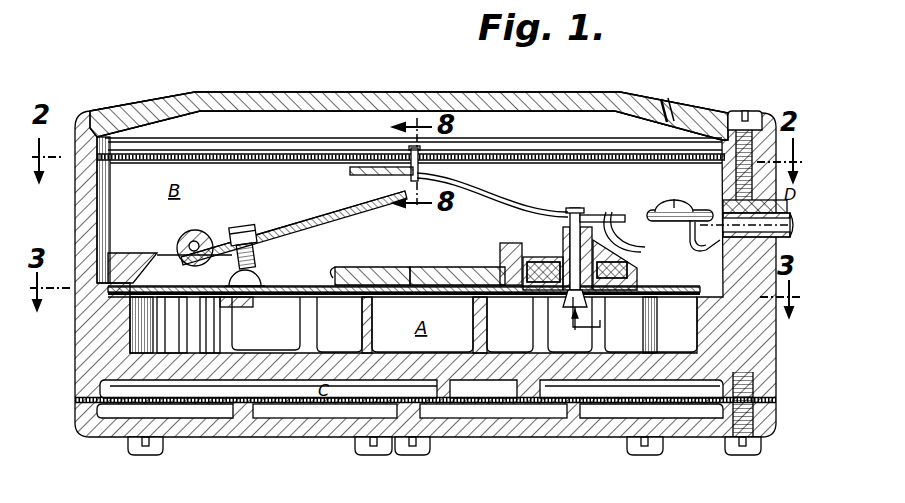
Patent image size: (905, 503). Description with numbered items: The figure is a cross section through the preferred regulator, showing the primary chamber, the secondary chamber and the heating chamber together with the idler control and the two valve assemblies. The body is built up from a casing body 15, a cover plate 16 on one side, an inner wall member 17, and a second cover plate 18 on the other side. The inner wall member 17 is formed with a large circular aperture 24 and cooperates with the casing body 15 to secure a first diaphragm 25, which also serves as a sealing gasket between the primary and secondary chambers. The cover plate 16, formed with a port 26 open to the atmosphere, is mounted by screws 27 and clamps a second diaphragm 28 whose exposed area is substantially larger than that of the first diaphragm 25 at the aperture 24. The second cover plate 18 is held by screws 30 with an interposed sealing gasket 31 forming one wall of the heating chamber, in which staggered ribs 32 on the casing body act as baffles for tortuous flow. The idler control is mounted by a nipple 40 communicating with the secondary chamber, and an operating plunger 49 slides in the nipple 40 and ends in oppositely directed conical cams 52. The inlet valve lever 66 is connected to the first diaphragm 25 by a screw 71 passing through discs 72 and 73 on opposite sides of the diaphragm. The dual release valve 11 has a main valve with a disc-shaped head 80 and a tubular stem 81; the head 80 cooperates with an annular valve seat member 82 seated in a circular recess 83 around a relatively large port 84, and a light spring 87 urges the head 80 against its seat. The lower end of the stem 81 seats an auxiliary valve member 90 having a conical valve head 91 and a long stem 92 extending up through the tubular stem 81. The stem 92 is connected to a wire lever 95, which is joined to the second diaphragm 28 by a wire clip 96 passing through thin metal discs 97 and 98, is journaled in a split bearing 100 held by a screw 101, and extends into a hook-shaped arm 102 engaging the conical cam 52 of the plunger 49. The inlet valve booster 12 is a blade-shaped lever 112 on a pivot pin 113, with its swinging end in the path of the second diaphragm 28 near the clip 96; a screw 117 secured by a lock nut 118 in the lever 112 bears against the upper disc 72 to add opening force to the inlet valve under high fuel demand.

The dual release valve 11 is at (586, 328).
The inlet valve booster 12 is at (312, 220).
The casing body 15 is at (82, 340).
The cover plate 16 is at (612, 100).
The inner wall member 17 is at (465, 267).
The second cover plate 18 is at (300, 438).
The circular aperture 24 is at (335, 268).
The first diaphragm 25 is at (507, 325).
The port 26 is at (668, 106).
The screws 27 is at (756, 111).
The second diaphragm 28 is at (216, 161).
The screws 30 is at (146, 456).
The sealing gasket 31 is at (222, 396).
The staggered ribs 32 is at (600, 392).
The nipple 40 is at (726, 202).
The operating plunger 49 is at (746, 223).
The conical cams 52 is at (696, 238).
The lever 66 is at (232, 306).
The screw 71 is at (258, 274).
The disc 72 is at (300, 284).
The disc 73 is at (218, 325).
The disc-shaped head 80 is at (612, 292).
The tubular stem 81 is at (570, 232).
The annular valve seat member 82 is at (512, 244).
The circular recess 83 is at (535, 292).
The port 84 is at (610, 248).
The spring 87 is at (552, 292).
The auxiliary valve member 90 is at (572, 308).
The conical valve head 91 is at (596, 300).
The stem 92 is at (583, 214).
The lever 95 is at (512, 205).
The wire clip 96 is at (410, 180).
The metal disc 97 is at (302, 148).
The metal disc 98 is at (258, 163).
The bearing 100 is at (655, 209).
The screw 101 is at (678, 200).
The hook-shaped arm 102 is at (652, 244).
The blade-shaped lever 112 is at (356, 214).
The pivot pin 113 is at (197, 231).
The screw 117 is at (242, 226).
The lock nut 118 is at (262, 240).